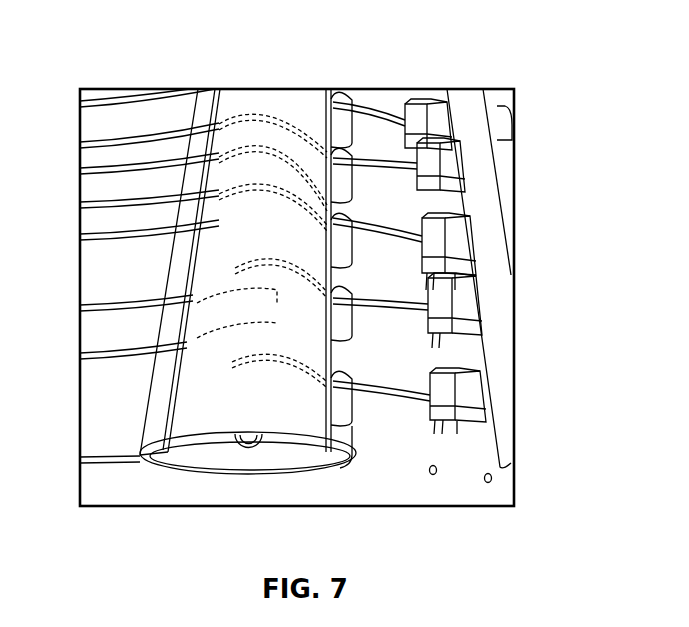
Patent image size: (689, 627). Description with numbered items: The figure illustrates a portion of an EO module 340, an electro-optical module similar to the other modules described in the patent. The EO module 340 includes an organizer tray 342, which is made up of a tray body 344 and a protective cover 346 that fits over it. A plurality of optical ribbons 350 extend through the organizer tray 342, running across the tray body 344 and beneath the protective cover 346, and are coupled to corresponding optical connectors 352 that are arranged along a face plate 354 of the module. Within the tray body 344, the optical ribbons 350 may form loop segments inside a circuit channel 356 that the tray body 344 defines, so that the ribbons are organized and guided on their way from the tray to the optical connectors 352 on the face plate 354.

The EO module 340 is at (476, 70).
The organizer tray 342 is at (115, 437).
The tray body 344 is at (195, 457).
The protective cover 346 is at (303, 127).
The optical ribbons 350 is at (128, 142).
The optical connectors 352 is at (463, 391).
The face plate 354 is at (497, 247).
The circuit channel 356 is at (248, 458).